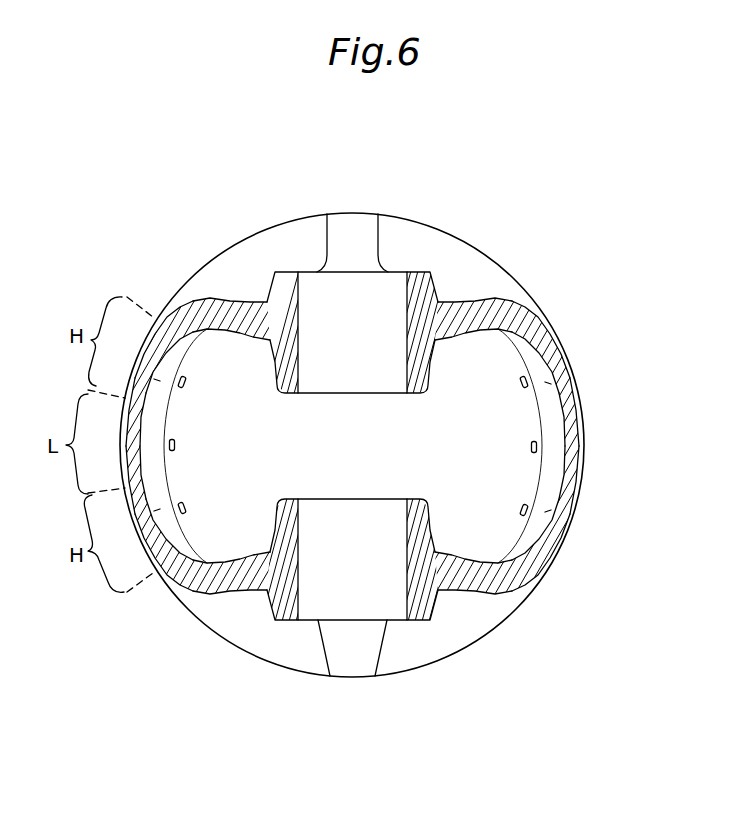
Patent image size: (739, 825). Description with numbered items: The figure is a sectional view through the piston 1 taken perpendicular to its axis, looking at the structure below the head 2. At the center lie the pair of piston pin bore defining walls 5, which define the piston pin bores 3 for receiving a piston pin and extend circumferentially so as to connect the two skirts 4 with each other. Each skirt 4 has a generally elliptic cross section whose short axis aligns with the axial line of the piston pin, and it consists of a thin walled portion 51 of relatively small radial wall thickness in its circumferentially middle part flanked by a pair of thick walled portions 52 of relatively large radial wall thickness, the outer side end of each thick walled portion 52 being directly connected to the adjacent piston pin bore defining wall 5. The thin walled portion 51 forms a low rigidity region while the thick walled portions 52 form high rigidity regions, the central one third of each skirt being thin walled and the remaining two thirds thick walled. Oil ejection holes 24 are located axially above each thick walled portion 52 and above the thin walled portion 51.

The piston 1 is at (441, 211).
The head 2 is at (473, 247).
The piston pin bore 3 is at (327, 270).
The skirt 4 is at (578, 380).
The piston pin bore defining wall 5 is at (220, 298).
The oil ejection hole 24 is at (527, 528).
The thin walled portion 51 is at (578, 448).
The thick walled portion 52 is at (546, 330).